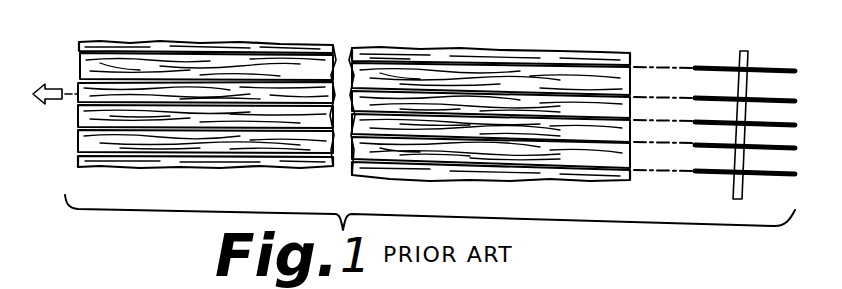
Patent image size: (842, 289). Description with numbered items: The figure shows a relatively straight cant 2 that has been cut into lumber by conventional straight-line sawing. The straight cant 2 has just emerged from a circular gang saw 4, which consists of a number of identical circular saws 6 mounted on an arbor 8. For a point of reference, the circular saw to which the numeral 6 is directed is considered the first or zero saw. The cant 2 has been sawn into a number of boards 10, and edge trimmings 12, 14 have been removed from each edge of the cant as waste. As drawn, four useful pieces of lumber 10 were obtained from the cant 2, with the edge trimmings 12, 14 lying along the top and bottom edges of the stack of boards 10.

The straight cant 2 is at (354, 104).
The circular gang saw 4 is at (725, 58).
The circular saws 6 is at (720, 173).
The arbor 8 is at (746, 50).
The boards 10 is at (533, 103).
The edge trimming 12 is at (223, 44).
The edge trimming 14 is at (230, 168).